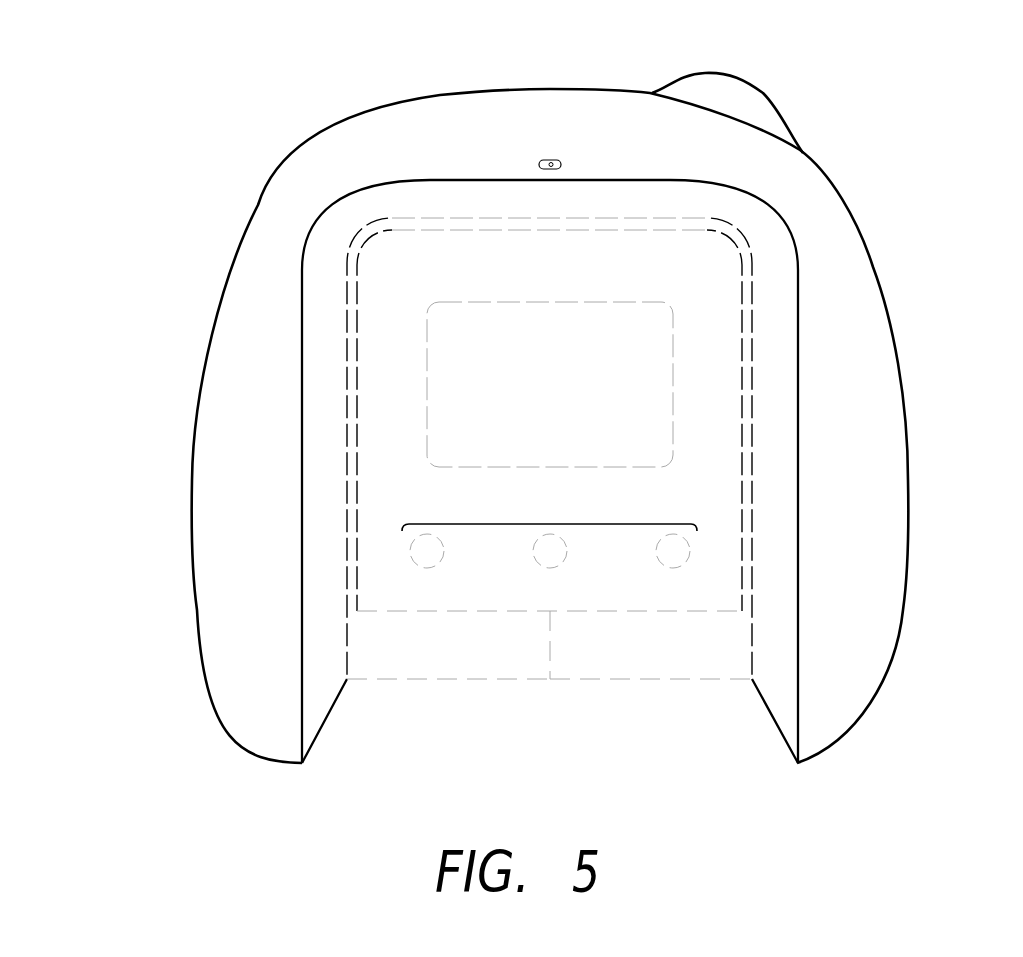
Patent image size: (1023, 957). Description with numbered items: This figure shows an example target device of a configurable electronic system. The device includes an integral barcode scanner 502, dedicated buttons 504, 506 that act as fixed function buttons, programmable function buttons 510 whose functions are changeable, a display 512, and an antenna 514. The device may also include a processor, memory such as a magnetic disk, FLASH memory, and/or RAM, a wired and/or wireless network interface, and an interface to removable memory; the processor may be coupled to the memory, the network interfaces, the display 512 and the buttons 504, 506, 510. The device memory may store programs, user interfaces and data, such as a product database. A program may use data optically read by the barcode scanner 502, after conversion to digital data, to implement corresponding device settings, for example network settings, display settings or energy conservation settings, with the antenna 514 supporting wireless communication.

The integral barcode scanner 502 is at (463, 679).
The dedicated button 504 is at (413, 650).
The dedicated button 506 is at (604, 652).
The programmable function buttons 510 is at (550, 524).
The display 512 is at (423, 370).
The antenna 514 is at (735, 73).